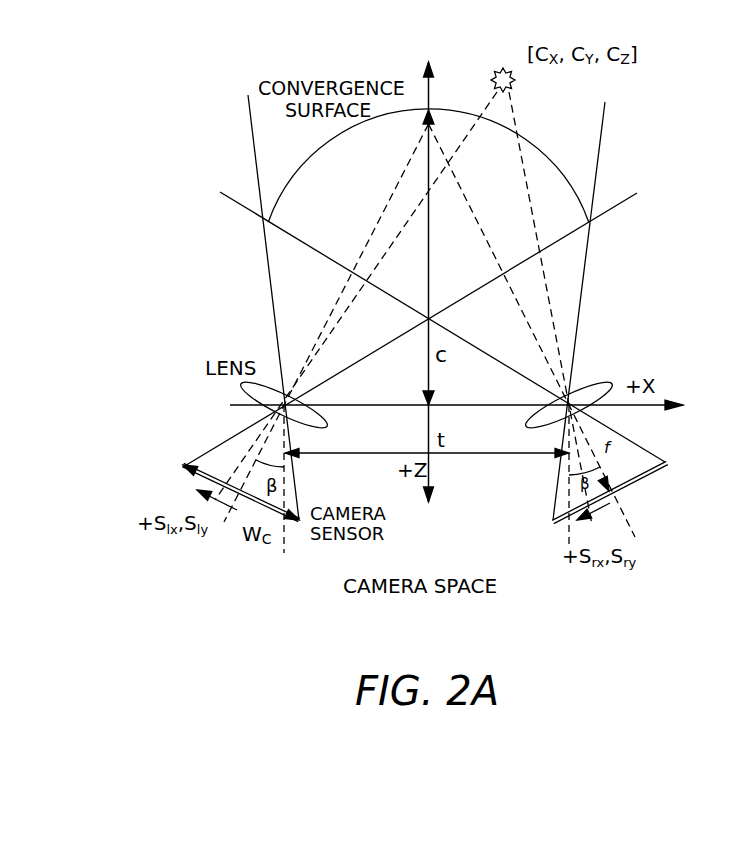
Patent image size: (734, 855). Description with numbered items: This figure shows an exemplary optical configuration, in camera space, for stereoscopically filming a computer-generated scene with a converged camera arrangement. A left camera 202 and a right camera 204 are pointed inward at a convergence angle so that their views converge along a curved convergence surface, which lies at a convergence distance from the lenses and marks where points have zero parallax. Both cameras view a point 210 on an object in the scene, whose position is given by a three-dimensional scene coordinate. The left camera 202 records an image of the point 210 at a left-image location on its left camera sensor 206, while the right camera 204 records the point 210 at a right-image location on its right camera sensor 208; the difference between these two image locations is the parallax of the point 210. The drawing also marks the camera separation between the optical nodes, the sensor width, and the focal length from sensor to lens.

The left camera 202 is at (231, 475).
The right camera 204 is at (617, 473).
The left camera sensor 206 is at (186, 466).
The right camera sensor 208 is at (667, 463).
The point 210 is at (497, 68).